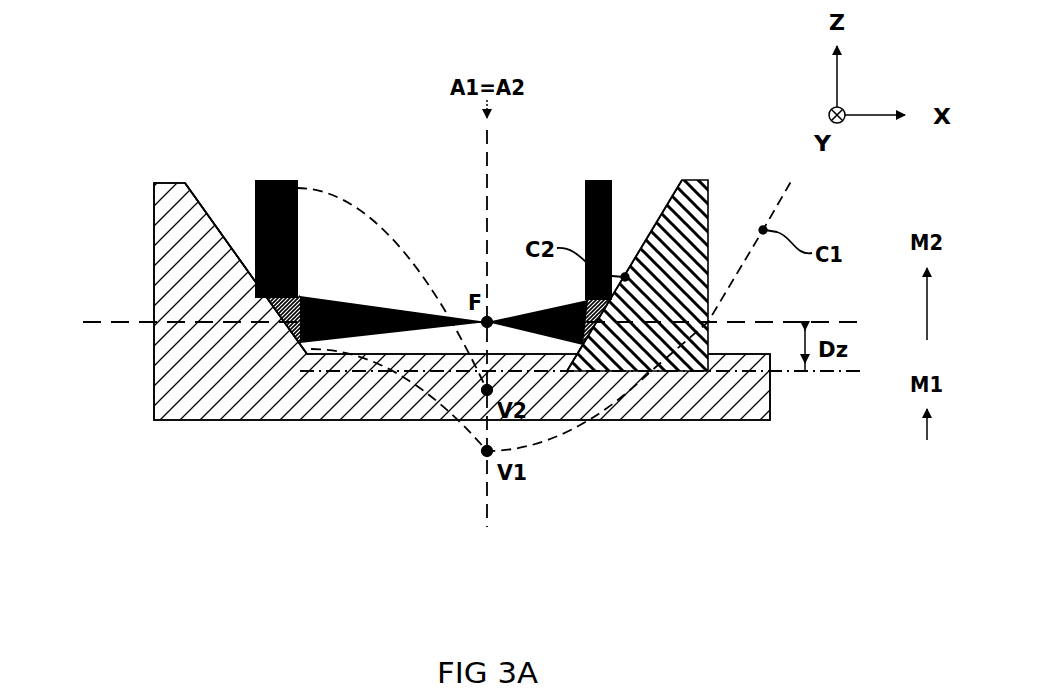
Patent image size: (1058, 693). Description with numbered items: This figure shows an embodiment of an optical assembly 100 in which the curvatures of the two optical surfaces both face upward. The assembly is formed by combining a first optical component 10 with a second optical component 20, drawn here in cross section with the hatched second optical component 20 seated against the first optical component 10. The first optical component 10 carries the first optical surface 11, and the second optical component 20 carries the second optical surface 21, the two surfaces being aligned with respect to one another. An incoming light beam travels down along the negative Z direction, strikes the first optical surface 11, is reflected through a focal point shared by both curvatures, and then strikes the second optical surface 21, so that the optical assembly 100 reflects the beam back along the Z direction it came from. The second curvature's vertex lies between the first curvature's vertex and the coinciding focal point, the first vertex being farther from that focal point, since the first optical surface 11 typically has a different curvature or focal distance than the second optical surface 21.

The optical assembly 100 is at (137, 111).
The first optical component 10 is at (168, 298).
The first optical surface 11 is at (281, 319).
The second optical component 20 is at (692, 205).
The second optical surface 21 is at (590, 319).